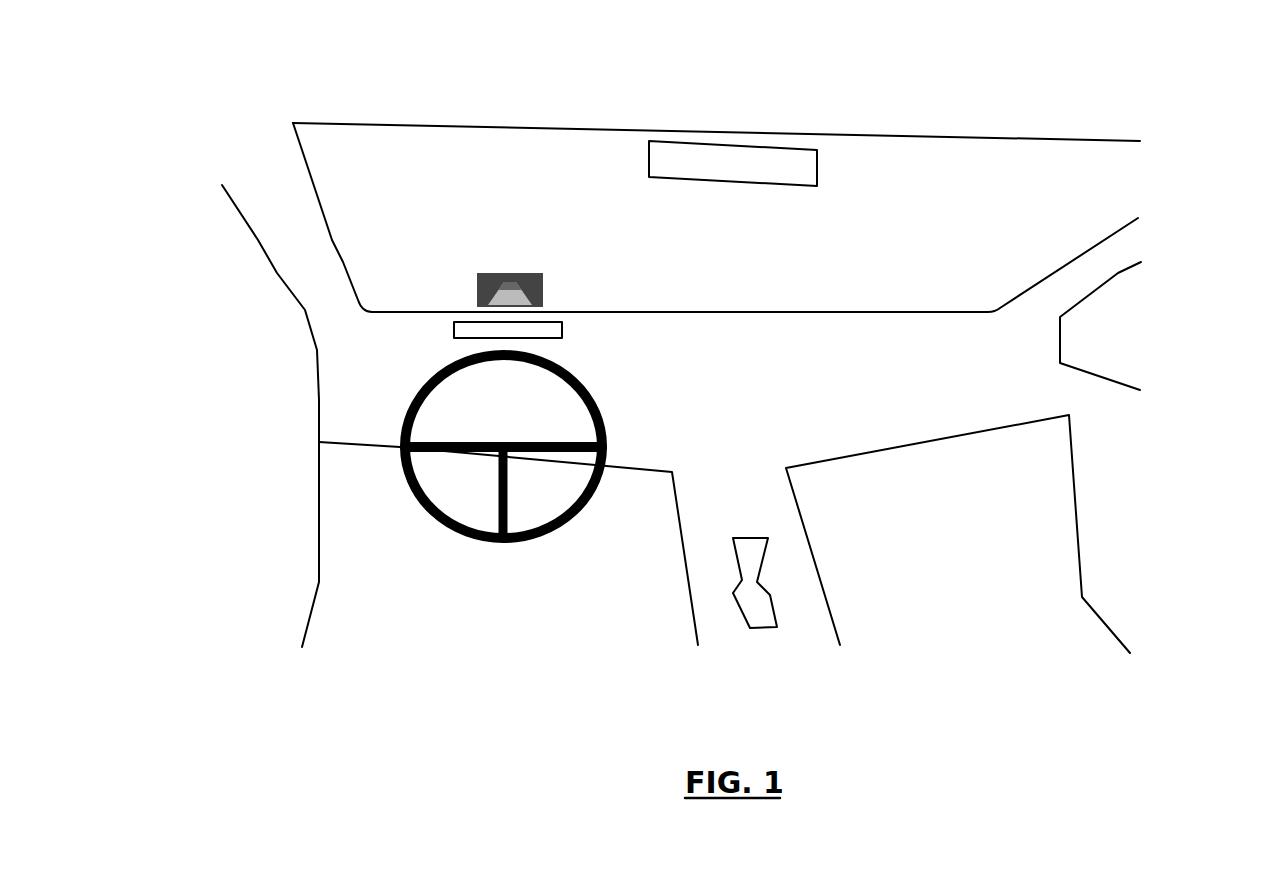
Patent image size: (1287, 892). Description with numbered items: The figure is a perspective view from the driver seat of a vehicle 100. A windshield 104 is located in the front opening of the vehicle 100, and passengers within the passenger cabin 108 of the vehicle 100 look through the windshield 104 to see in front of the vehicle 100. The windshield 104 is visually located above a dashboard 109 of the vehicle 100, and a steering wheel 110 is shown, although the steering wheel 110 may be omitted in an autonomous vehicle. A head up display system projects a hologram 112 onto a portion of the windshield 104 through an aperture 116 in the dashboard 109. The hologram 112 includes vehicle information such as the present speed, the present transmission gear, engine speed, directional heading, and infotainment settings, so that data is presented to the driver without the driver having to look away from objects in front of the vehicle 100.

The vehicle 100 is at (275, 173).
The windshield 104 is at (425, 244).
The passenger cabin 108 is at (1103, 524).
The dashboard 109 is at (388, 358).
The steering wheel 110 is at (582, 383).
The hologram 112 is at (448, 280).
The aperture 116 is at (454, 327).